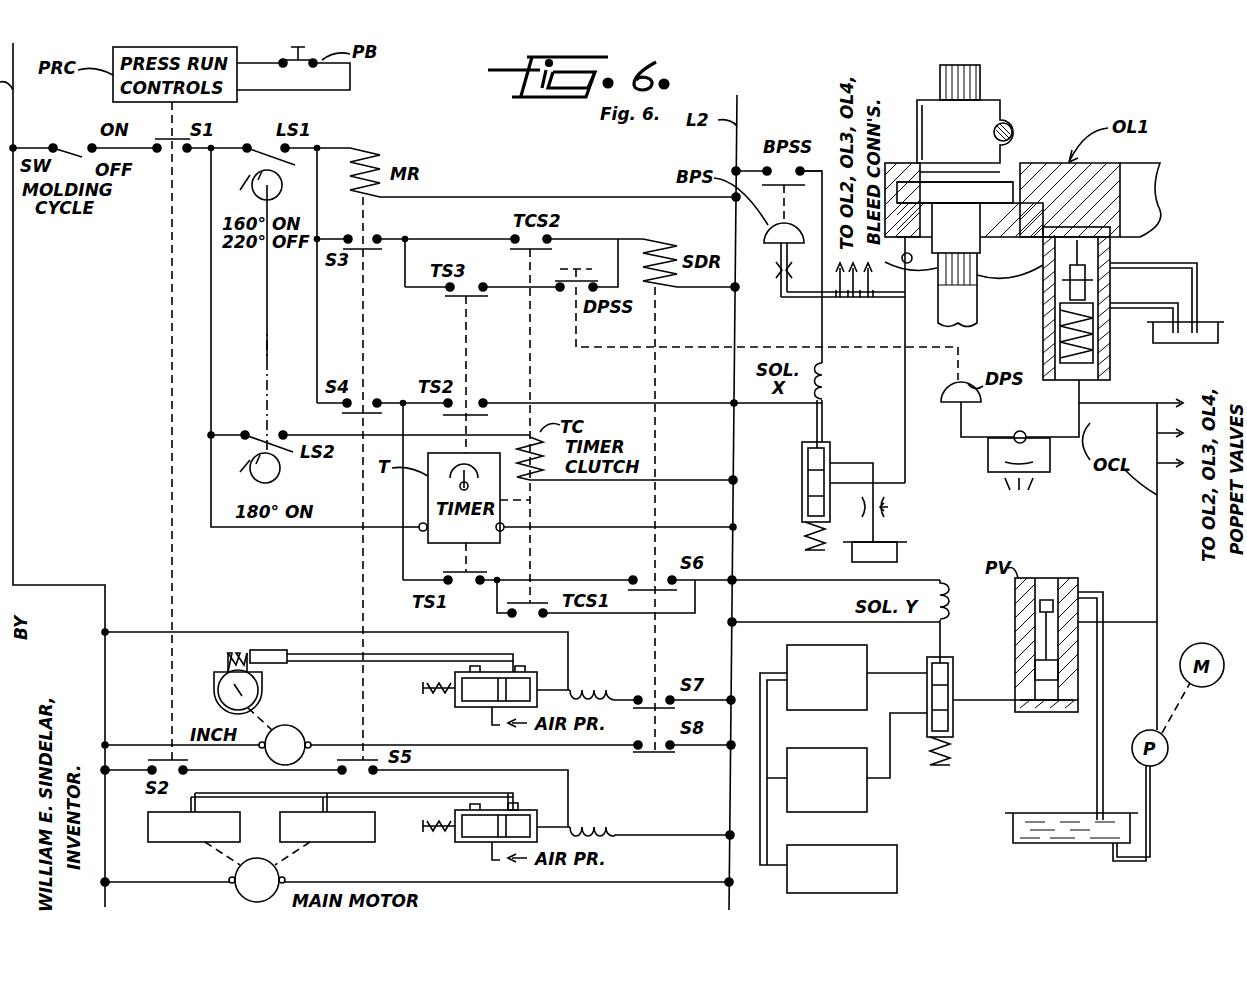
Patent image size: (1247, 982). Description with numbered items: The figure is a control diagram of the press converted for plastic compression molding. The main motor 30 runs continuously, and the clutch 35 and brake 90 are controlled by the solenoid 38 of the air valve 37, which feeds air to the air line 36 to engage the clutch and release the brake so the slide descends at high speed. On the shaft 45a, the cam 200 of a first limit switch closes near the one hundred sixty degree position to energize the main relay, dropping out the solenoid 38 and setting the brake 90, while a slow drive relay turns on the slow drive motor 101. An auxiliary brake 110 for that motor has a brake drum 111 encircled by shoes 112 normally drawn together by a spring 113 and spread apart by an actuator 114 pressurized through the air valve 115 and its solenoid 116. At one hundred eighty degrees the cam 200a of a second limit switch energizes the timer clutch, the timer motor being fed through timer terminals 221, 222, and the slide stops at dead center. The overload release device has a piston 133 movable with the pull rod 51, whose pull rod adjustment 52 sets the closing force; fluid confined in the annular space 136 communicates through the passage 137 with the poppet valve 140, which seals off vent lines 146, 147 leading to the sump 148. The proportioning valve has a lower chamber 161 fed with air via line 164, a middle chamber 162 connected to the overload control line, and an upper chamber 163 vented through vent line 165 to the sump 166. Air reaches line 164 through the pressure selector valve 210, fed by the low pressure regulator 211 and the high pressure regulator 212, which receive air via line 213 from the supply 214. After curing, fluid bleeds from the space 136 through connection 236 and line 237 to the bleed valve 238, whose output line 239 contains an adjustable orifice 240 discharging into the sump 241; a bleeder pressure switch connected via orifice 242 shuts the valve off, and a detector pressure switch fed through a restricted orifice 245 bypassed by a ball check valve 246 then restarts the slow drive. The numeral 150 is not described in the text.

The main motor 30 is at (238, 895).
The clutch 35 is at (170, 842).
The air line 36 is at (514, 803).
The air valve 37 is at (460, 848).
The solenoid 38 is at (588, 824).
The shaft 45a is at (252, 322).
The pull rod 51 is at (980, 72).
The pull rod adjustment 52 is at (1012, 102).
The brake 90 is at (345, 842).
The slow drive motor 101 is at (300, 728).
The auxiliary brake 110 is at (314, 665).
The brake drum 111 is at (222, 705).
The shoes 112 is at (214, 678).
The spring 113 is at (243, 652).
The actuator 114 is at (270, 650).
The air valve 115 is at (460, 711).
The solenoid 116 is at (602, 685).
The piston 133 is at (930, 165).
The annular space 136 is at (913, 205).
The passage 137 is at (1078, 225).
The poppet valve 140 is at (1036, 327).
The vent line 146 is at (1160, 262).
The vent line 147 is at (1140, 305).
The sump 148 is at (1170, 343).
The valve 150 is at (1043, 268).
The lower chamber 161 is at (1056, 705).
The middle chamber 162 is at (1040, 618).
The upper chamber 163 is at (1048, 578).
The line 164 is at (990, 703).
The vent line 165 is at (1085, 588).
The sump 166 is at (1060, 843).
The cam 200 is at (255, 195).
The cam 200a is at (250, 478).
The pressure selector valve 210 is at (950, 737).
The low pressure regulator 211 is at (867, 795).
The high pressure regulator 212 is at (845, 650).
The line 213 is at (787, 836).
The supply 214 is at (897, 862).
The timer terminal 221 is at (415, 520).
The timer terminal 222 is at (506, 526).
The connection 236 is at (912, 222).
The line 237 is at (905, 330).
The bleed valve 238 is at (793, 465).
The output line 239 is at (842, 458).
The adjustable orifice 240 is at (890, 507).
The sump 241 is at (897, 553).
The orifice 242 is at (776, 272).
The restricted orifice 245 is at (1019, 471).
The ball check valve 246 is at (1030, 425).